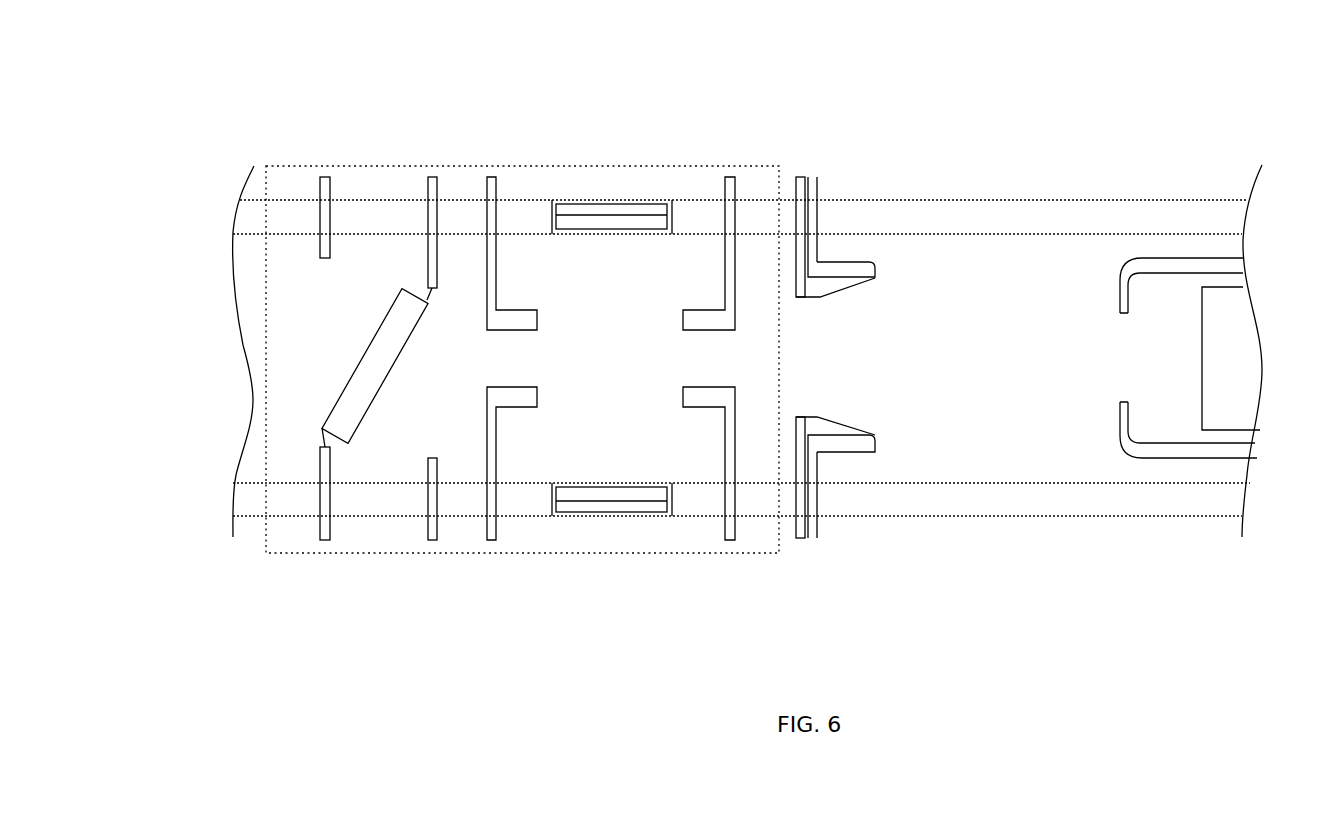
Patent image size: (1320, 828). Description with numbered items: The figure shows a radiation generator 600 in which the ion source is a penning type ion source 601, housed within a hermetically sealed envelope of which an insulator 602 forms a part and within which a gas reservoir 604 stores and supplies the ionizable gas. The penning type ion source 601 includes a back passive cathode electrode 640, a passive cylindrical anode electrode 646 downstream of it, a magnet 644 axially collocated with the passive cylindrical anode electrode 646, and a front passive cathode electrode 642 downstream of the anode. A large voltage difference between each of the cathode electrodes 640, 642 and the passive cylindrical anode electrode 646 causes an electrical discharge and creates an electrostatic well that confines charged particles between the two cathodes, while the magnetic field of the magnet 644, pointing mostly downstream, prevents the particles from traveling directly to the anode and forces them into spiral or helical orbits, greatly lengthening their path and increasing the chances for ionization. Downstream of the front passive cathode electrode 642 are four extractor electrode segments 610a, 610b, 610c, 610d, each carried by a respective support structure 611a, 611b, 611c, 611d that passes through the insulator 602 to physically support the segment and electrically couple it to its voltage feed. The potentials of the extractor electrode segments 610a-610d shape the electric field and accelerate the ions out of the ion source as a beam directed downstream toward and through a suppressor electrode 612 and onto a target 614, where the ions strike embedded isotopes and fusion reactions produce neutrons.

The radiation generator 600 is at (236, 72).
The penning type ion source 601 is at (318, 168).
The insulator 602 is at (237, 212).
The gas reservoir 604 is at (331, 410).
The back passive cathode electrode 640 is at (487, 258).
The front passive cathode electrode 642 is at (725, 275).
The magnet 644 is at (620, 218).
The passive cylindrical anode electrode 646 is at (550, 213).
The extractor electrode segment 610a is at (795, 270).
The extractor electrode segment 610b is at (835, 262).
The extractor electrode segment 610c is at (797, 428).
The extractor electrode segment 610d is at (838, 453).
The support structure 611a is at (795, 212).
The support structure 611b is at (817, 202).
The support structure 611c is at (797, 505).
The support structure 611d is at (817, 503).
The suppressor electrode 612 is at (1128, 258).
The target 614 is at (1222, 287).